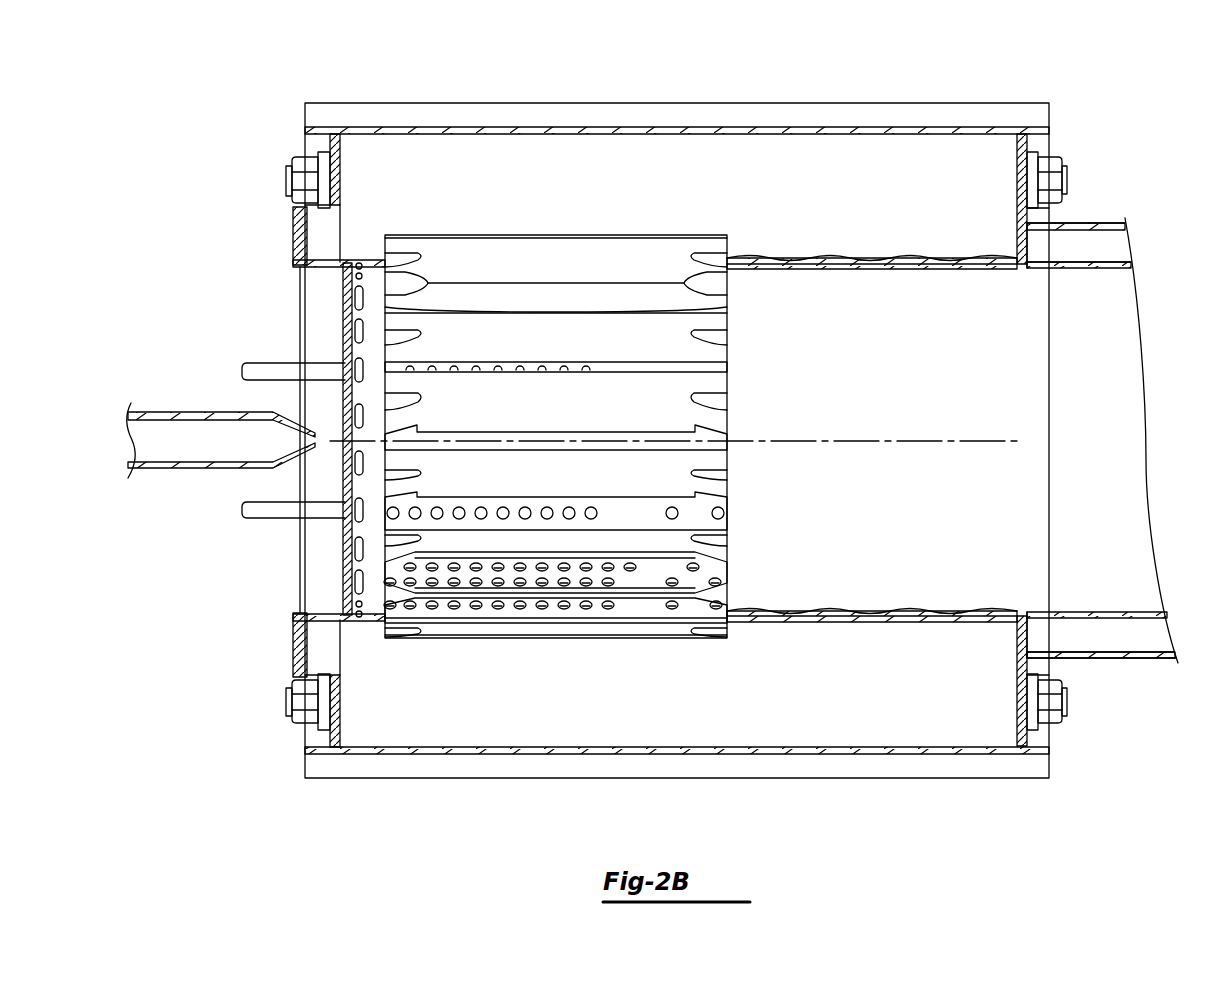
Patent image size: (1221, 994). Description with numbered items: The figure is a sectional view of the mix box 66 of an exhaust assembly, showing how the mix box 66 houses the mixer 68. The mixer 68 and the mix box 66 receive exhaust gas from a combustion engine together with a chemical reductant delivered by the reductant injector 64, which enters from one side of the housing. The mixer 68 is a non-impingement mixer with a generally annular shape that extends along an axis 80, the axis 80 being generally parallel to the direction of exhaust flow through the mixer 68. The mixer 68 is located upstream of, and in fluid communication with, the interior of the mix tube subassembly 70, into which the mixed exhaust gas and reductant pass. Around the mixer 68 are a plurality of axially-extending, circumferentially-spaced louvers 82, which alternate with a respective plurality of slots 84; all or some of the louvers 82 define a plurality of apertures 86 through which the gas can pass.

The reductant injector 64 is at (161, 453).
The mix box 66 is at (977, 118).
The mixer 68 is at (638, 236).
The mix tube subassembly 70 is at (1085, 222).
The axis 80 is at (915, 440).
The louvers 82 is at (600, 584).
The slots 84 is at (655, 368).
The apertures 86 is at (498, 583).